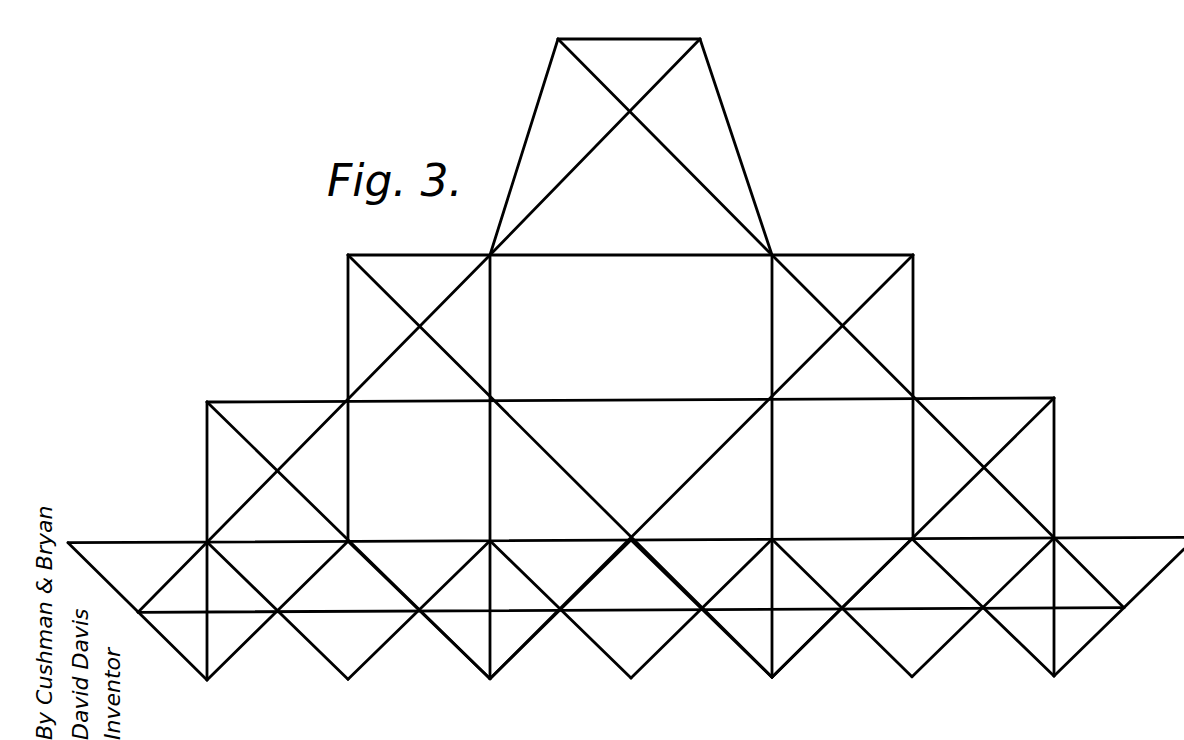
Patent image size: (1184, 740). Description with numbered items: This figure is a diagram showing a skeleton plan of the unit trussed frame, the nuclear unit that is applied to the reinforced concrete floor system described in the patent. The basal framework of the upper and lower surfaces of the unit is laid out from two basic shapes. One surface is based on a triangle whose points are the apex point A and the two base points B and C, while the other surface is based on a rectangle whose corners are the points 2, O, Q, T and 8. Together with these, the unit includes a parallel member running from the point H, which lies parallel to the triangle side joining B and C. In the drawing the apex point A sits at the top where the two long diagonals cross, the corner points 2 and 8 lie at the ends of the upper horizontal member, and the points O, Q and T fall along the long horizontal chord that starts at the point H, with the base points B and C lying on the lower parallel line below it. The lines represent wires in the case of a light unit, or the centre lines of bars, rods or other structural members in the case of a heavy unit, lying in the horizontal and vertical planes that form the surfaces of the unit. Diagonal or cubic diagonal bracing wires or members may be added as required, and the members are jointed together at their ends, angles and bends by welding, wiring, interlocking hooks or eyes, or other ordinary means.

The triangle apex point A is at (631, 147).
The rectangle corner point 2 is at (513, 147).
The rectangle corner point 8 is at (742, 147).
The parallel member end point H is at (134, 604).
The triangle base point B is at (616, 613).
The triangle base point C is at (1119, 612).
The rectangle corner point O is at (481, 467).
The rectangle corner point Q is at (630, 467).
The rectangle corner point T is at (763, 466).